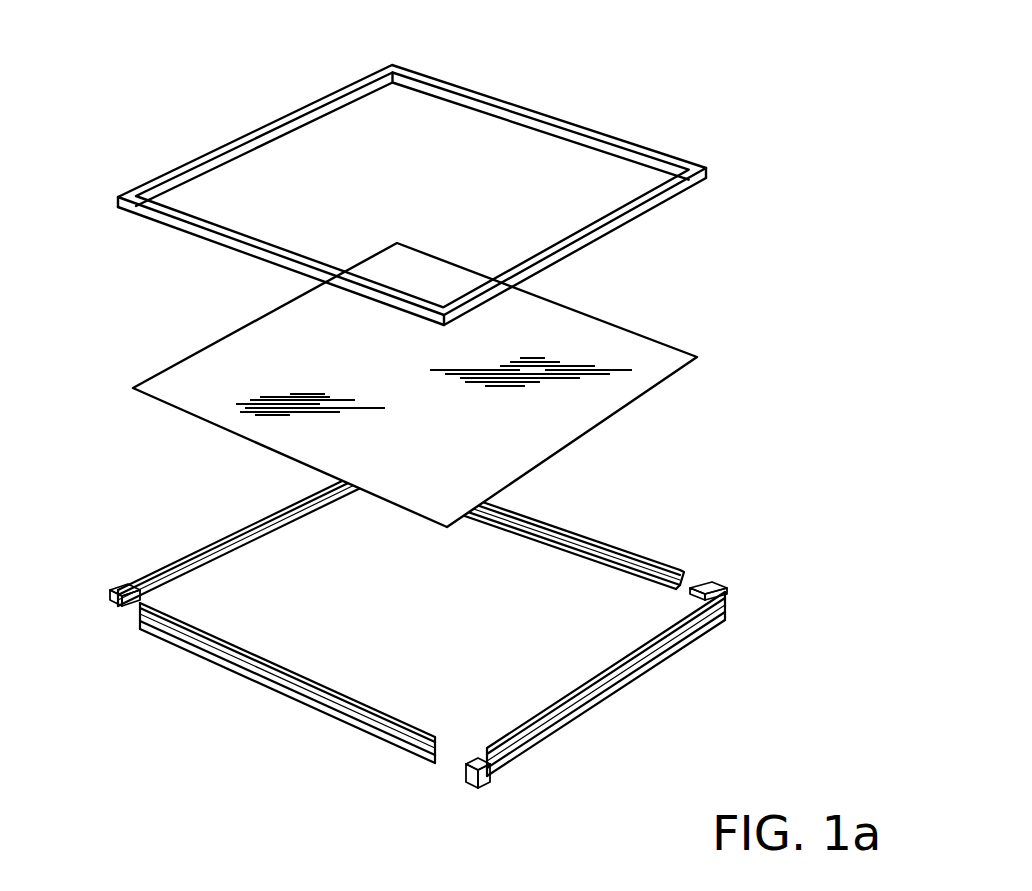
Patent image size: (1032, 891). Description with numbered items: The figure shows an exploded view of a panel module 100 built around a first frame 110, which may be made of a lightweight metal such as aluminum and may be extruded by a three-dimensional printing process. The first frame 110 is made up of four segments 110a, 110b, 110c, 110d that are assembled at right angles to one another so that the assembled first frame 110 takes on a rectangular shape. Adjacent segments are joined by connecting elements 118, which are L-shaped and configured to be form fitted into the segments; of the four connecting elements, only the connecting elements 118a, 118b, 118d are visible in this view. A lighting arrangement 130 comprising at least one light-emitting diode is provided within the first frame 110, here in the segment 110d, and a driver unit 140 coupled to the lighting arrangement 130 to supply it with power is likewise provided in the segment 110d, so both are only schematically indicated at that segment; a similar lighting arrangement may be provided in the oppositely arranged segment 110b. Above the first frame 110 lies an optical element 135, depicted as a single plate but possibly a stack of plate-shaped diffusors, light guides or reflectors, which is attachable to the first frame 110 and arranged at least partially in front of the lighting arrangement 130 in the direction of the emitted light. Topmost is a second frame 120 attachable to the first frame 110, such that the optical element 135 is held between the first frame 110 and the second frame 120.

The panel module 100 is at (764, 78).
The first frame 110 is at (250, 724).
The segment 110a is at (215, 653).
The segment 110b is at (180, 550).
The segment 110c is at (597, 530).
The segment 110d is at (619, 684).
The connecting element 118 is at (464, 761).
The connecting element 118a is at (472, 758).
The connecting element 118b is at (130, 603).
The connecting element 118d is at (697, 583).
The second frame 120 is at (648, 150).
The lighting arrangement 130 is at (593, 682).
The optical element 135 is at (645, 352).
The driver unit 140 is at (609, 683).